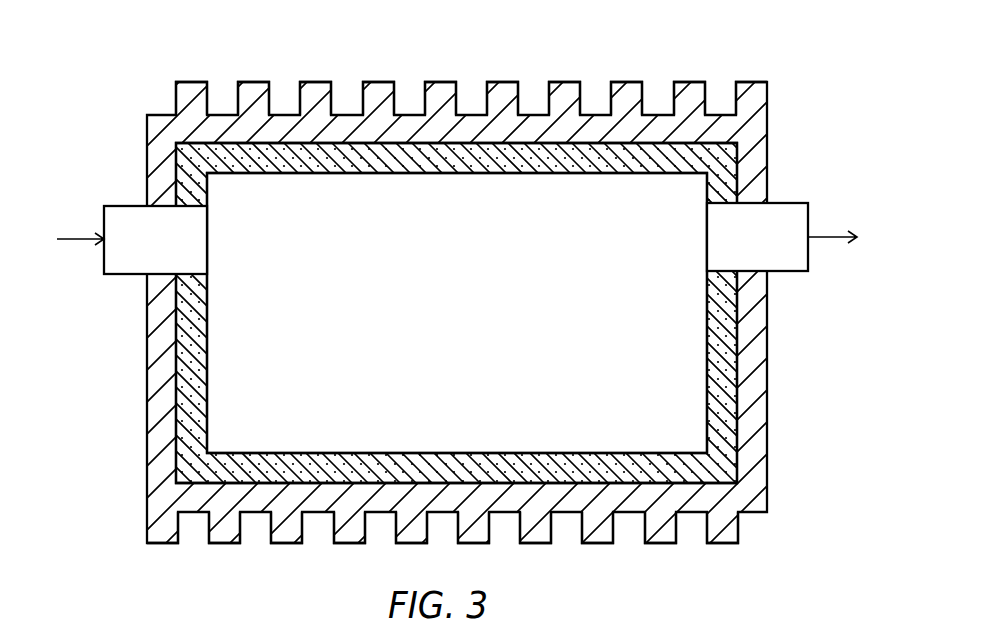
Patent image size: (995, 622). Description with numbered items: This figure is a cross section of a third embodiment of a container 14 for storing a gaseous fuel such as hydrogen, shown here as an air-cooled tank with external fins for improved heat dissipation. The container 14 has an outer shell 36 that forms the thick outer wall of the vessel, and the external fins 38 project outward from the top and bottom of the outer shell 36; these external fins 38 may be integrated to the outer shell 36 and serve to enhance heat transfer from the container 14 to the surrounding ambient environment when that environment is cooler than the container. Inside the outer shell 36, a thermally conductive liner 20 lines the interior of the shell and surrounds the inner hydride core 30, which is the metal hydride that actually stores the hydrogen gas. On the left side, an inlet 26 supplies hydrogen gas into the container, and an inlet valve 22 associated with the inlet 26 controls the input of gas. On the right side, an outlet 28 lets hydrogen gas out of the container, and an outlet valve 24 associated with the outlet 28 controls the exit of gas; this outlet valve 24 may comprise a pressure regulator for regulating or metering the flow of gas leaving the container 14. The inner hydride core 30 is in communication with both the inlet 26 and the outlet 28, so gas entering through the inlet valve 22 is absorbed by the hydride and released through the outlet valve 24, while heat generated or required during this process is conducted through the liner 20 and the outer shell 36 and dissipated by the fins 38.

The container 14 is at (497, 309).
The thermally conductive liner 20 is at (572, 157).
The inlet valve 22 is at (120, 214).
The outlet valve 24 is at (807, 215).
The inlet 26 is at (105, 257).
The outlet 28 is at (808, 255).
The inner hydride core 30 is at (457, 313).
The outer shell 36 is at (627, 82).
The external fins 38 is at (200, 82).